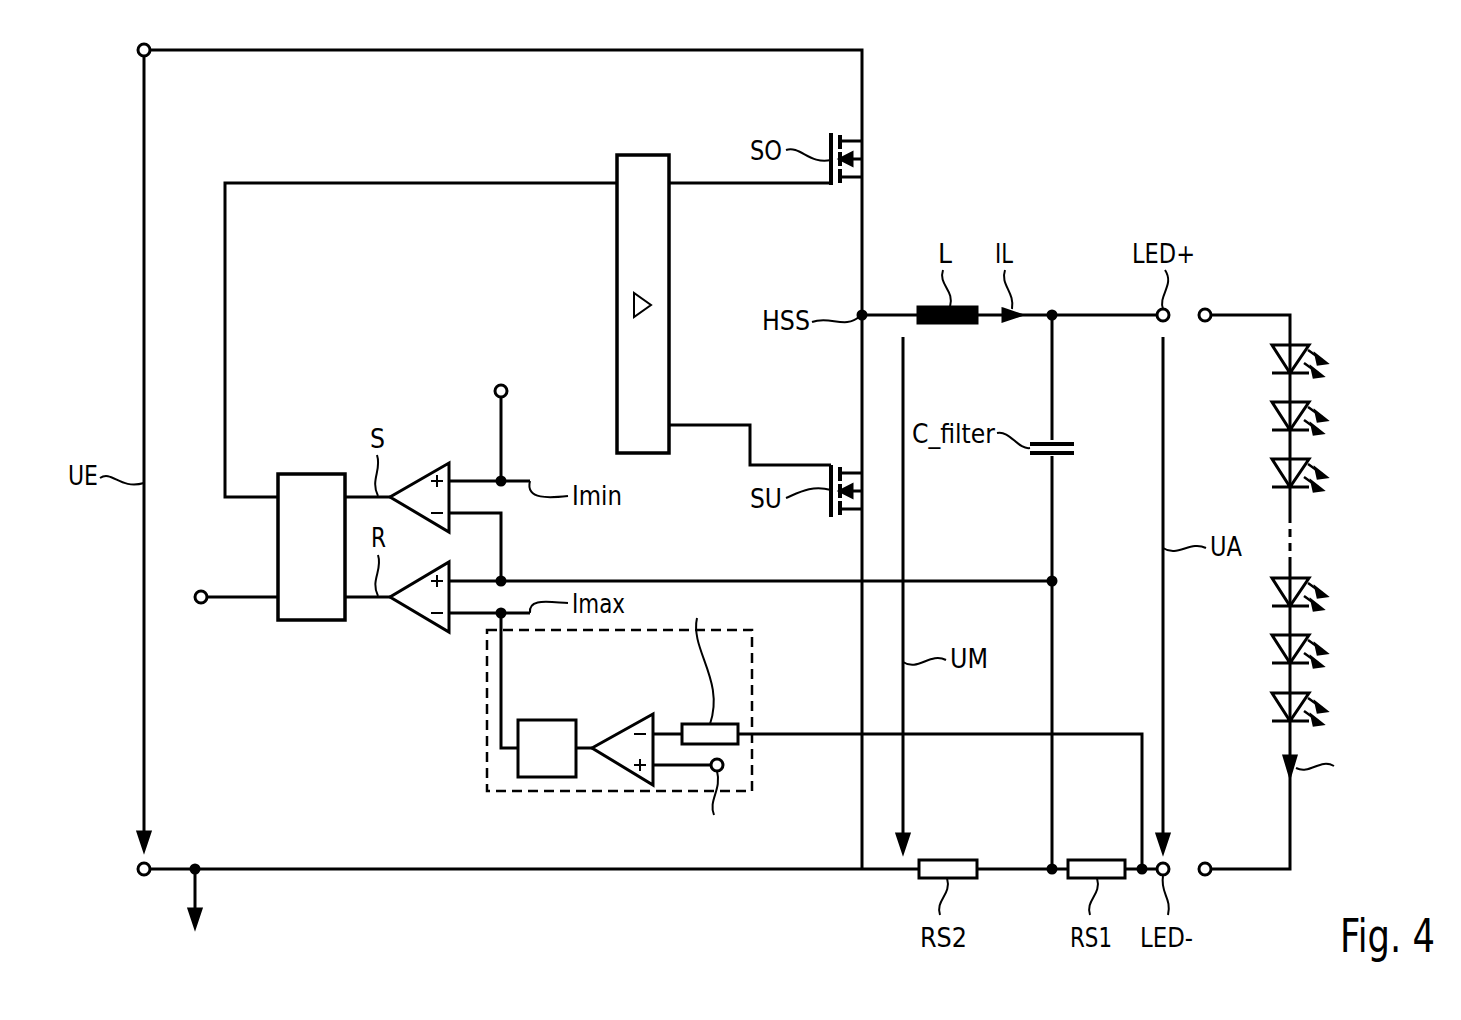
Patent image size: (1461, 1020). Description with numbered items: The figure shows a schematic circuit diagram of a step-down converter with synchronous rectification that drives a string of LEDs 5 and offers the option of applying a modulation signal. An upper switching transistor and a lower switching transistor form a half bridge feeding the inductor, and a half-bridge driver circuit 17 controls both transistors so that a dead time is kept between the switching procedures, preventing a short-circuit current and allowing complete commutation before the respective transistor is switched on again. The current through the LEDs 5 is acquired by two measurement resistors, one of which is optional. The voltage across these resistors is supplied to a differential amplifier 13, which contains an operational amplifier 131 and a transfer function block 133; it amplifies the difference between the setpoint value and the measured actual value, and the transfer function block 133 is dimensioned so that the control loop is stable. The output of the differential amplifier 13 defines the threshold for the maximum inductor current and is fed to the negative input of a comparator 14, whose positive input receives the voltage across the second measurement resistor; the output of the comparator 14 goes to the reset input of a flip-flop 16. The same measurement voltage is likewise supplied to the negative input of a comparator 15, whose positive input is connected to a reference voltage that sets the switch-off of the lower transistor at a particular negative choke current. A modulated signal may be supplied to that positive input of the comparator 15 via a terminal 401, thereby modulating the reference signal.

The LEDs 5 is at (1302, 292).
The differential amplifier 13 is at (656, 720).
The comparator 14 is at (414, 614).
The comparator 15 is at (418, 463).
The flip-flop 16 is at (310, 620).
The half-bridge driver circuit 17 is at (617, 258).
The operational amplifier 131 is at (617, 772).
The transfer function H(s) 133 is at (548, 777).
The terminal for a modulated signal 401 is at (501, 385).